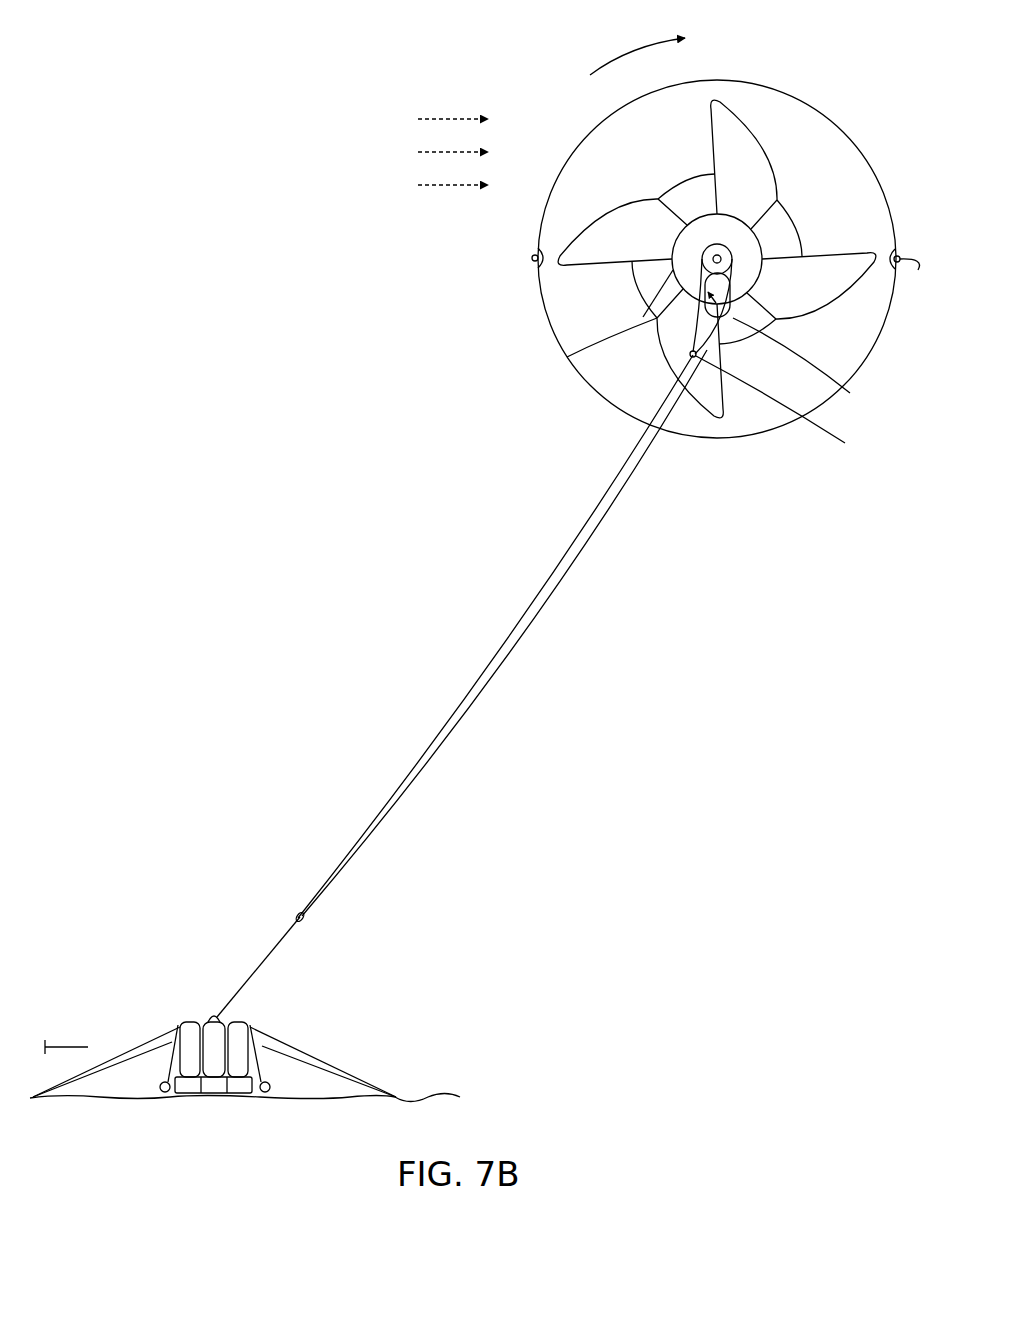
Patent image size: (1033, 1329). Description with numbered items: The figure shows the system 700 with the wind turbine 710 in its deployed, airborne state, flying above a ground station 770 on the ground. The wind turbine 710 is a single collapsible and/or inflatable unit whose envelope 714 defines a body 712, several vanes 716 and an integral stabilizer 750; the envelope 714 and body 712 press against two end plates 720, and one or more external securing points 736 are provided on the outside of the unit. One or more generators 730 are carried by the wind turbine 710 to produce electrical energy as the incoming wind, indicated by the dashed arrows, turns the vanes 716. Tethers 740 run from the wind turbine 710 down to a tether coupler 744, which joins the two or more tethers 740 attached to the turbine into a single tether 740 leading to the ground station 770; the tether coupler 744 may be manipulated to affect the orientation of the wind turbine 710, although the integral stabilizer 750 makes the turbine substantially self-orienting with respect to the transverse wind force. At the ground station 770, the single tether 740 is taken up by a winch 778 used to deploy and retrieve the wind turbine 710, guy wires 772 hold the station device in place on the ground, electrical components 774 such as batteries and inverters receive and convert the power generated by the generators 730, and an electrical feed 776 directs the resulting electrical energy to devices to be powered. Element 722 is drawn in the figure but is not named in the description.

The system 700 is at (170, 110).
The wind turbine 710 is at (692, 266).
The body 712 is at (802, 240).
The envelope 714 is at (781, 227).
The vanes 716 is at (738, 114).
The end plates 720 is at (567, 357).
The bridle line 722 is at (787, 405).
The generators 730 is at (791, 334).
The external securing points 736 is at (530, 258).
The tethers 740 is at (584, 544).
The tether coupler 744 is at (305, 918).
The integral stabilizer 750 is at (540, 303).
The ground station 770 is at (245, 1010).
The guy wires 772 is at (100, 1066).
The electrical components 774 is at (207, 1093).
The electrical feed 776 is at (84, 1047).
The winch 778 is at (213, 1013).